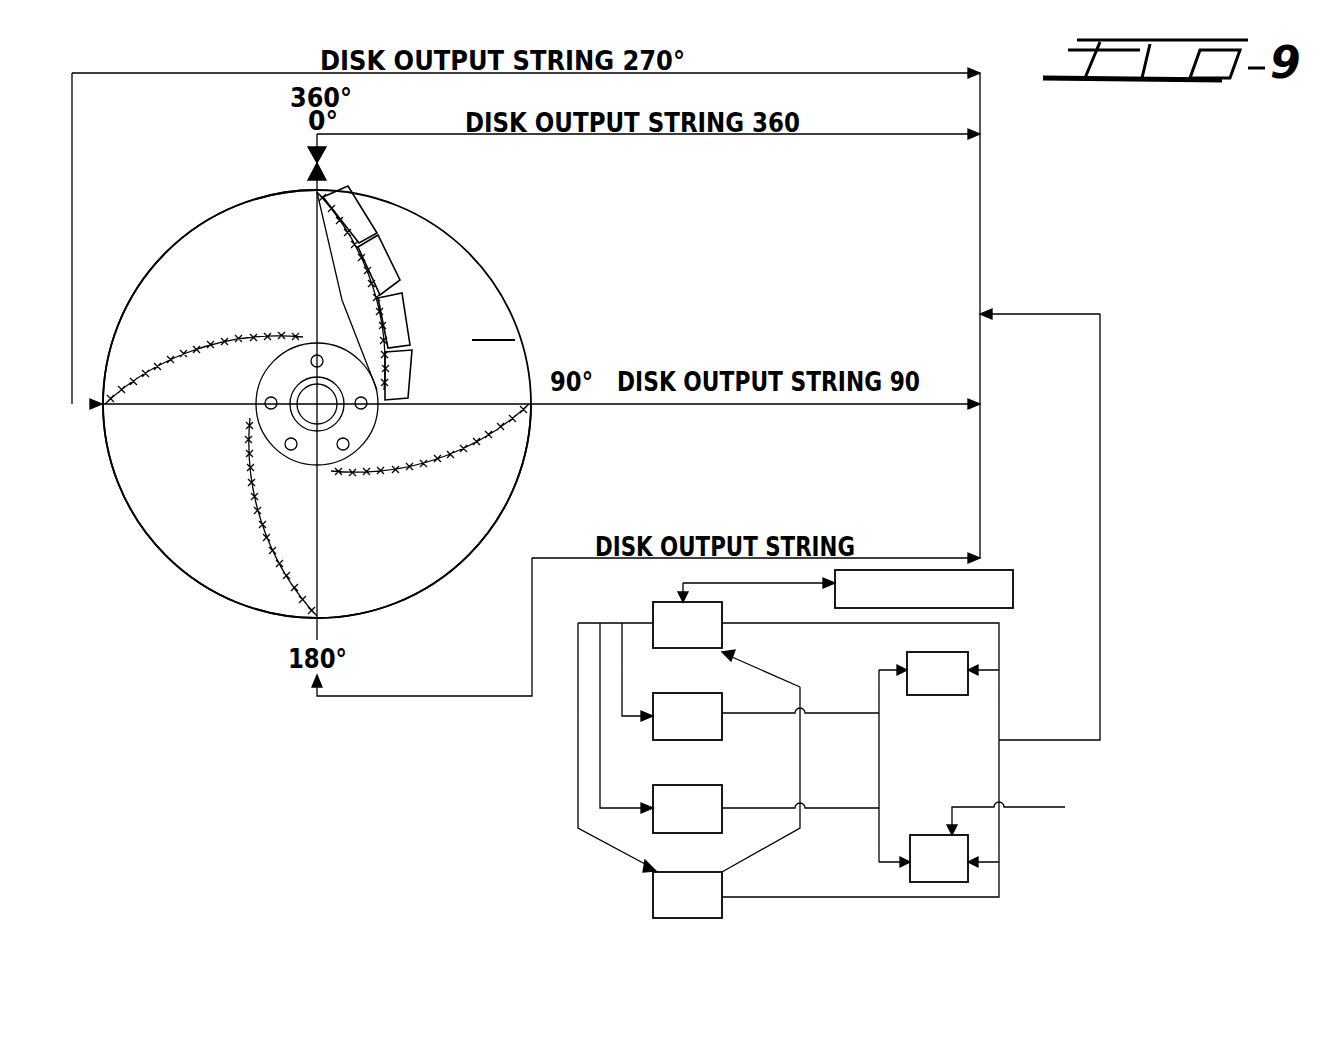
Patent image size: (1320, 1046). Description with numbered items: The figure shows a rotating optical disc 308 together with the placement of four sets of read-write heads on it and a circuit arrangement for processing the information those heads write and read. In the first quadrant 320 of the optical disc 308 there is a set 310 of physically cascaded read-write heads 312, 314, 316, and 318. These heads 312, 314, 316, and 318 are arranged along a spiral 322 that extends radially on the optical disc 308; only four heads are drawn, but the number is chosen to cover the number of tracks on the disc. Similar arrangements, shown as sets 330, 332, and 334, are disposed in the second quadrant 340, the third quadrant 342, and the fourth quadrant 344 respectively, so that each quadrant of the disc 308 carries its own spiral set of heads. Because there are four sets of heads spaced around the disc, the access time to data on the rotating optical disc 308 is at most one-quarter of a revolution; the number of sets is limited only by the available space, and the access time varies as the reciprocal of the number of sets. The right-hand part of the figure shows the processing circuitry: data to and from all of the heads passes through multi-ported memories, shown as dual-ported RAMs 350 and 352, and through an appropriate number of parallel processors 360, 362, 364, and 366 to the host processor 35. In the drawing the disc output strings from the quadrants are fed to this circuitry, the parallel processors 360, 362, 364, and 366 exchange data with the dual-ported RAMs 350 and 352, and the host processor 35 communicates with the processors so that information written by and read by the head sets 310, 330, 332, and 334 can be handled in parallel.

The host processor 35 is at (998, 608).
The rotating optical disc 308 is at (505, 292).
The set of physically cascaded read-write heads 310 is at (345, 303).
The read-write head 312 is at (412, 387).
The read-write head 314 is at (410, 340).
The read-write head 316 is at (398, 268).
The read-write head 318 is at (370, 202).
The first quadrant 320 is at (494, 357).
The spiral 322 is at (382, 298).
The set of read-write heads 330 is at (242, 330).
The set of read-write heads 332 is at (267, 538).
The set of read-write heads 334 is at (447, 462).
The second quadrant 340 is at (188, 234).
The third quadrant 342 is at (270, 593).
The fourth quadrant 344 is at (523, 472).
The dual-ported RAM 350 is at (928, 650).
The dual-ported RAM 352 is at (932, 835).
The parallel processor 360 is at (668, 600).
The parallel processor 362 is at (705, 692).
The parallel processor 364 is at (712, 784).
The parallel processor 366 is at (720, 872).